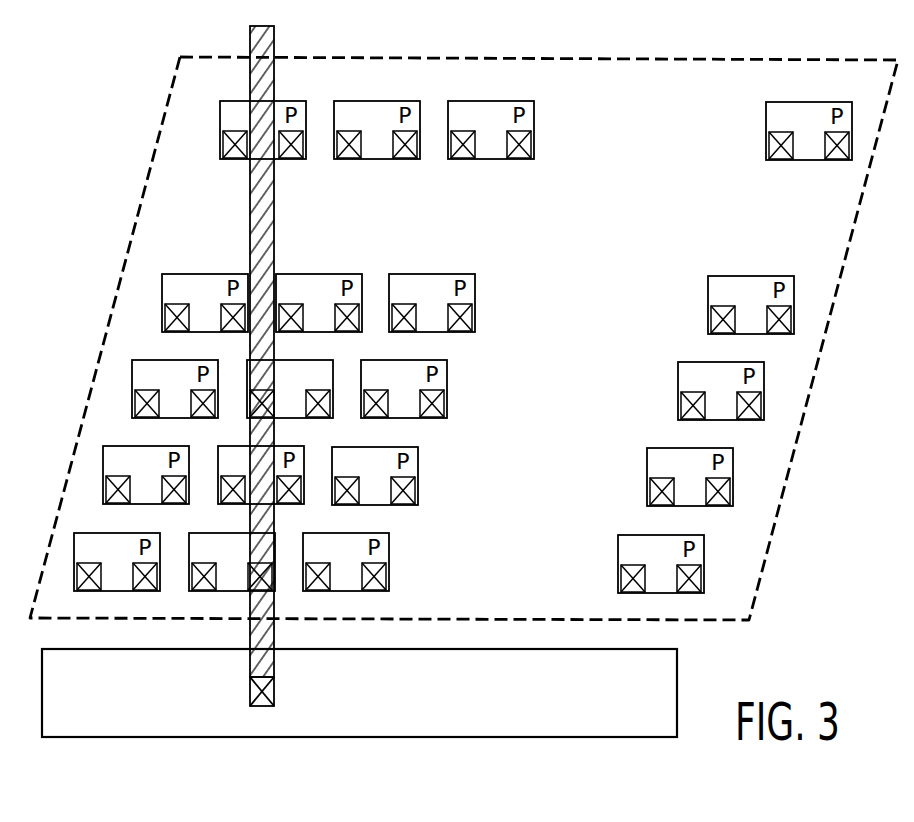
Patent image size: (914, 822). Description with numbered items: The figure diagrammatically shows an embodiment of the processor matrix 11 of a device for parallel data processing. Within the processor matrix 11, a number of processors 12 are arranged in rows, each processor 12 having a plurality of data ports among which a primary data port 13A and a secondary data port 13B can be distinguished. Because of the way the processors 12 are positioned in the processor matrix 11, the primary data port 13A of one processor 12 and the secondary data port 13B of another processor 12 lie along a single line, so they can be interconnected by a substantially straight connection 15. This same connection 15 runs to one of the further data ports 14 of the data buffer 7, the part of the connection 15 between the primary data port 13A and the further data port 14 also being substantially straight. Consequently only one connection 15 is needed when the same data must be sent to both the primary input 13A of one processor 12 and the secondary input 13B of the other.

The data buffer 7 is at (348, 717).
The processor matrix 11 is at (148, 160).
The processor 12 is at (290, 372).
The primary data port 13A is at (316, 416).
The secondary data port 13B is at (258, 412).
The further data port 14 is at (259, 710).
The connection 15 is at (257, 40).